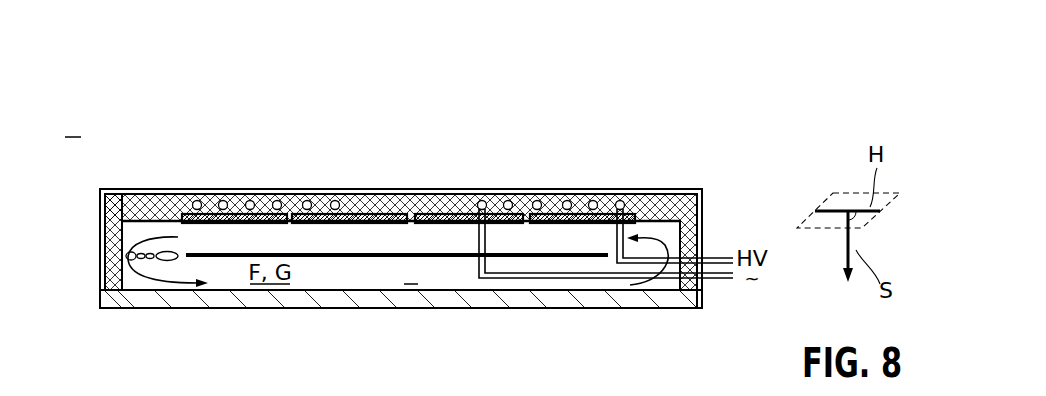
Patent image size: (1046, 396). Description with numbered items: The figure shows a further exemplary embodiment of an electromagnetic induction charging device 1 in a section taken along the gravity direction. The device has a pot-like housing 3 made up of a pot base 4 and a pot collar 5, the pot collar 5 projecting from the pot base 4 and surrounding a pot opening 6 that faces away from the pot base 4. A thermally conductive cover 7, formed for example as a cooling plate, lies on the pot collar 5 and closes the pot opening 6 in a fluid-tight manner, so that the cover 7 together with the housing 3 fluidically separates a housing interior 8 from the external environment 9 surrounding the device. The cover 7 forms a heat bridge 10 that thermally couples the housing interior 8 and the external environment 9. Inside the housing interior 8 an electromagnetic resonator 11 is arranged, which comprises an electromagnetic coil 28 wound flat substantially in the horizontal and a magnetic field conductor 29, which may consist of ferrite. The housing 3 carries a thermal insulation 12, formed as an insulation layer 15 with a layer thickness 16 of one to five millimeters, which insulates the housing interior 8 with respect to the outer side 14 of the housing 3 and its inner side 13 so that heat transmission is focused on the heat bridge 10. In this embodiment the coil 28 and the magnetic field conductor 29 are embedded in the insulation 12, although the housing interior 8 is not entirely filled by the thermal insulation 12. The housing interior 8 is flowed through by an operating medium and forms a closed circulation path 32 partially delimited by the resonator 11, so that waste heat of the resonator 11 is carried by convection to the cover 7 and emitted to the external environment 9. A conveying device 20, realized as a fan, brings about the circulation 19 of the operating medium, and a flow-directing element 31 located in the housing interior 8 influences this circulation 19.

The electromagnetic induction charging device 1 is at (784, 146).
The housing 3 is at (401, 180).
The pot base 4 is at (215, 194).
The pot collar 5 is at (98, 243).
The pot opening 6 is at (123, 292).
The cover 7 is at (401, 334).
The housing interior 8 is at (411, 272).
The external environment 9 is at (73, 125).
The heat bridge 10 is at (483, 294).
The electromagnetic resonator 11 is at (452, 200).
The thermal insulation 12 is at (668, 207).
The inner side 13 is at (98, 222).
The outer side 14 is at (163, 190).
The insulation layer 15 is at (650, 190).
The layer thickness 16 is at (660, 234).
The circulation 19 is at (176, 291).
The conveying device 20 is at (100, 268).
The electromagnetic coil 28 is at (277, 192).
The magnetic field conductor 29 is at (322, 192).
The flow-directing element 31 is at (383, 258).
The circulation path 32 is at (325, 272).